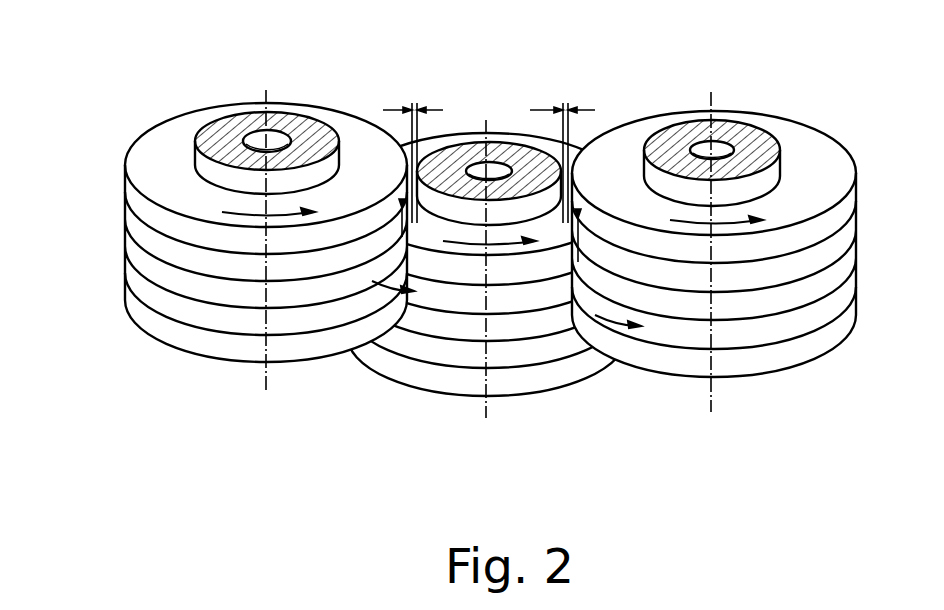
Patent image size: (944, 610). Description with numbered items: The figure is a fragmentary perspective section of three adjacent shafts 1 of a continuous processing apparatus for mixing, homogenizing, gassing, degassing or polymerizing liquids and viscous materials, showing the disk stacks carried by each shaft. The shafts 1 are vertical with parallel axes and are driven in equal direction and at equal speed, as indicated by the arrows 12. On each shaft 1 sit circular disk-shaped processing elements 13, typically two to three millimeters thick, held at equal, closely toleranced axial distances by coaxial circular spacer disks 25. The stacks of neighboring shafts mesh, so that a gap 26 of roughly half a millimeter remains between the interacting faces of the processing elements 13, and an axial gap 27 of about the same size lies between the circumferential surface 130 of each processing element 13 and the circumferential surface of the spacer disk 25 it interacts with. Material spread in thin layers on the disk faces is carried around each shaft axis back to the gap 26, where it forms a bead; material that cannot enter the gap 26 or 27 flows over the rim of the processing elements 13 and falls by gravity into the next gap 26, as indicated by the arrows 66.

The shaft 1 is at (264, 390).
The arrows 12 is at (232, 210).
The processing element 13 is at (147, 158).
The circumferential surface 130 is at (300, 343).
The spacer disk 25 is at (200, 148).
The gap 26 is at (400, 200).
The gap 27 is at (414, 102).
The arrows 66 is at (376, 268).